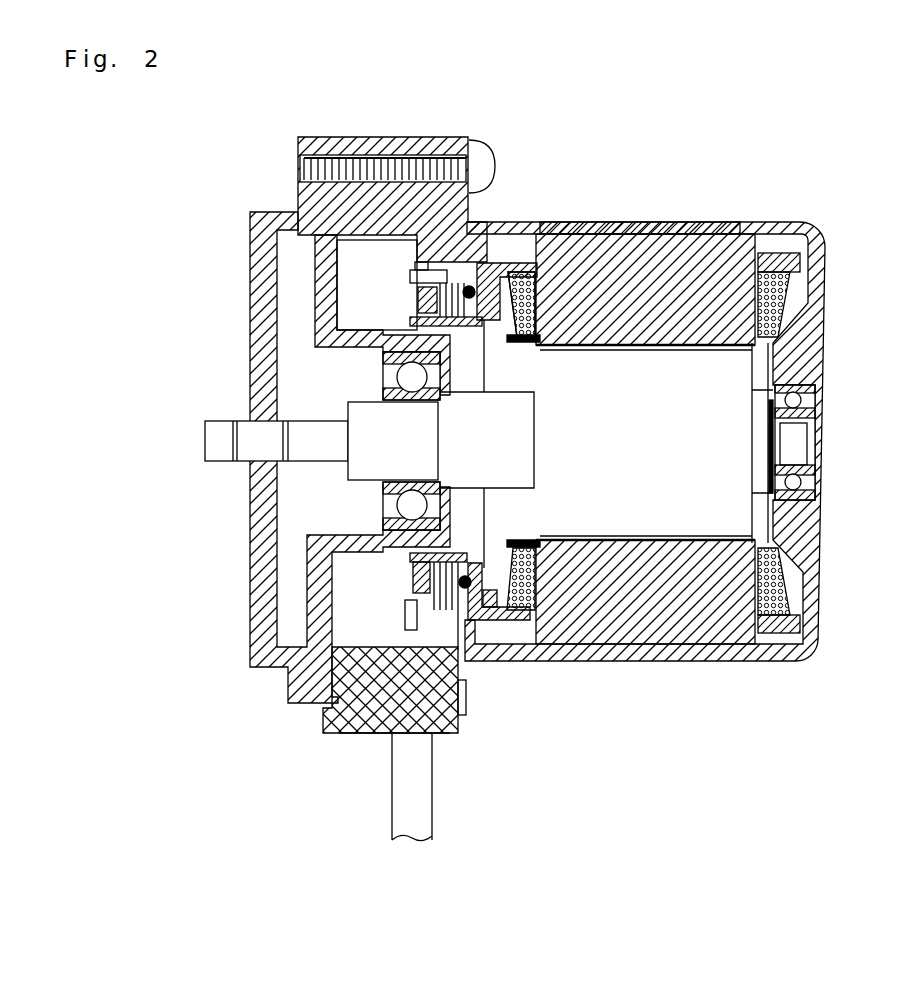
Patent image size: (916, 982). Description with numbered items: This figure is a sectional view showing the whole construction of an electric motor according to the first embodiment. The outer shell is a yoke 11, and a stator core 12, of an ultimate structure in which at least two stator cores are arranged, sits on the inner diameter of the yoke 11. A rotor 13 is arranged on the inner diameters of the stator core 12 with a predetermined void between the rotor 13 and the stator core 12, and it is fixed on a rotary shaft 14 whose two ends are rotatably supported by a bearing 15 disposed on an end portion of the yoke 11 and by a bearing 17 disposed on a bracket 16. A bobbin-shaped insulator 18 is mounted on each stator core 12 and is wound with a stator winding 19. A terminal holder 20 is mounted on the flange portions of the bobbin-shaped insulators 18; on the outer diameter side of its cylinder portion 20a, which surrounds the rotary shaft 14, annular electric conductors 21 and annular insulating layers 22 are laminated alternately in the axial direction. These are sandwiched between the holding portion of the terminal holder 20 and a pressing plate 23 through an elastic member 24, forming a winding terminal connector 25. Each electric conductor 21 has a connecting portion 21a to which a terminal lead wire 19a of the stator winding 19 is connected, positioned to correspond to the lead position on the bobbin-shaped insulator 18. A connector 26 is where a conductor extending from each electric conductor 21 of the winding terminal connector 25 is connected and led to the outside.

The yoke 11 is at (700, 228).
The stator core 12 is at (653, 230).
The rotor 13 is at (732, 372).
The rotary shaft 14 is at (362, 462).
The bearing 15 is at (818, 380).
The bracket 16 is at (305, 203).
The bearing 17 is at (405, 378).
The bobbin-shaped insulator 18 is at (550, 280).
The stator winding 19 is at (597, 233).
The terminal lead wire 19a is at (540, 292).
The terminal holder 20 is at (480, 632).
The cylinder portion 20a is at (422, 588).
The annular electric conductor 21 is at (440, 722).
The connecting portion 21a is at (420, 262).
The annular insulating layer 22 is at (492, 215).
The pressing plate 23 is at (428, 578).
The elastic member 24 is at (482, 577).
The winding terminal connector 25 is at (390, 298).
The connector 26 is at (437, 725).